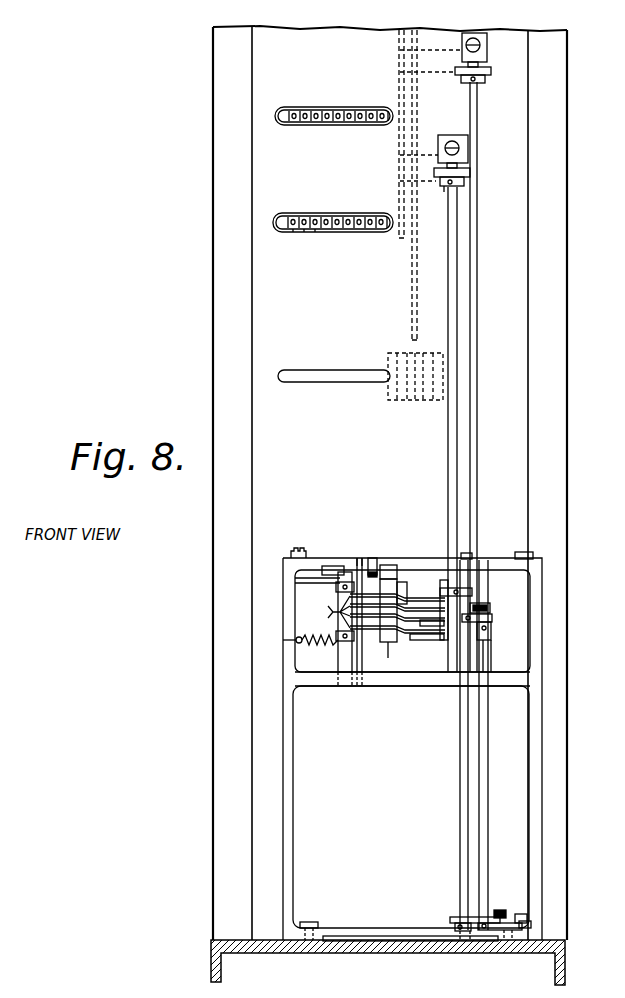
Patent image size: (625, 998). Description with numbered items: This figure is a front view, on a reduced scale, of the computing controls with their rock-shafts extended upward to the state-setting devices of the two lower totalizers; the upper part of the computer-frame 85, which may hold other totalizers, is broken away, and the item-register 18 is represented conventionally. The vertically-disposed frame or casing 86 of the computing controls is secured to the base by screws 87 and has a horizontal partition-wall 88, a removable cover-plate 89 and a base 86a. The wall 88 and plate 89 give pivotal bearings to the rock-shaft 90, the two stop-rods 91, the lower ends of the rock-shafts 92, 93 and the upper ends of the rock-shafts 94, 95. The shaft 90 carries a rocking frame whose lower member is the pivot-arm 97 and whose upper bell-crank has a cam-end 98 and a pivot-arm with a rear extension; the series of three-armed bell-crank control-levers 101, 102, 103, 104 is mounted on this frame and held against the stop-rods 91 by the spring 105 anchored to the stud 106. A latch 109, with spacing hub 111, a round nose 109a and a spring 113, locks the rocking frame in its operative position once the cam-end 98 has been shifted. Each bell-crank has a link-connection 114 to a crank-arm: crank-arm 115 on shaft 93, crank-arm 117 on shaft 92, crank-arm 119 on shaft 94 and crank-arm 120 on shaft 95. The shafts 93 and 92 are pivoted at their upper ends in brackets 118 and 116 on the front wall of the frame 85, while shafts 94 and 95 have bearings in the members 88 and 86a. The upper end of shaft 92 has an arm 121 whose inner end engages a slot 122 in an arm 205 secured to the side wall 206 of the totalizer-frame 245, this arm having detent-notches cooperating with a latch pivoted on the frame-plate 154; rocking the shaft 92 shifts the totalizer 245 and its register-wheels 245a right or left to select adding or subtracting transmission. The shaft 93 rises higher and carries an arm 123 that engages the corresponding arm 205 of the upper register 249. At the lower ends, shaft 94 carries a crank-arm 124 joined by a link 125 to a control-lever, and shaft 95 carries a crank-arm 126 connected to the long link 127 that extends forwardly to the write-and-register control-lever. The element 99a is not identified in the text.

The item-register 18 is at (397, 400).
The vertical section of the computing machine 85 is at (172, 820).
The frame or casing of the computing controls 86 is at (284, 831).
The base of the frame 86a is at (418, 935).
The screws 87 is at (309, 922).
The horizontal partition-wall 88 is at (378, 680).
The cover-plate 89 is at (291, 556).
The rock-shaft 90 is at (340, 655).
The stop-rods 91 is at (363, 663).
The rock-shaft 92 is at (448, 470).
The rock-shaft 93 is at (477, 470).
The rock-shaft 94 is at (471, 556).
The rock-shaft 95 is at (517, 554).
The pivot-arm 97 is at (400, 657).
The cam-end 98 is at (298, 585).
The block 99a is at (398, 572).
The bell-crank control-lever 101 is at (435, 628).
The bell-crank control-lever 102 is at (411, 585).
The bell-crank control-lever 103 is at (430, 644).
The bell-crank control-lever 104 is at (400, 634).
The spring 105 is at (317, 631).
The stud 106 is at (276, 639).
The latch 109 is at (373, 568).
The round nose 109a is at (331, 567).
The spacing hub 111 is at (387, 565).
The spring 113 is at (358, 572).
The link-connection 114 is at (435, 607).
The crank-arm 115 is at (491, 608).
The bracket 116 is at (460, 148).
The crank-arm 117 is at (472, 590).
The bracket 118 is at (486, 47).
The crank-arm 119 is at (493, 619).
The crank-arm 120 is at (492, 634).
The arm 121 is at (466, 182).
The slot 122 is at (443, 190).
The arm 123 is at (488, 77).
The crank-arm 124 is at (452, 917).
The link 125 is at (499, 910).
The crank-arm 126 is at (512, 920).
The long link 127 is at (523, 918).
The frame-plate 154 is at (418, 114).
The arm 205 is at (436, 78).
The side wall of totalizer-frame 206 is at (398, 206).
The totalizer-frame 245 is at (345, 240).
The register-wheels 245a is at (314, 231).
The totalizer or register 249 is at (331, 128).